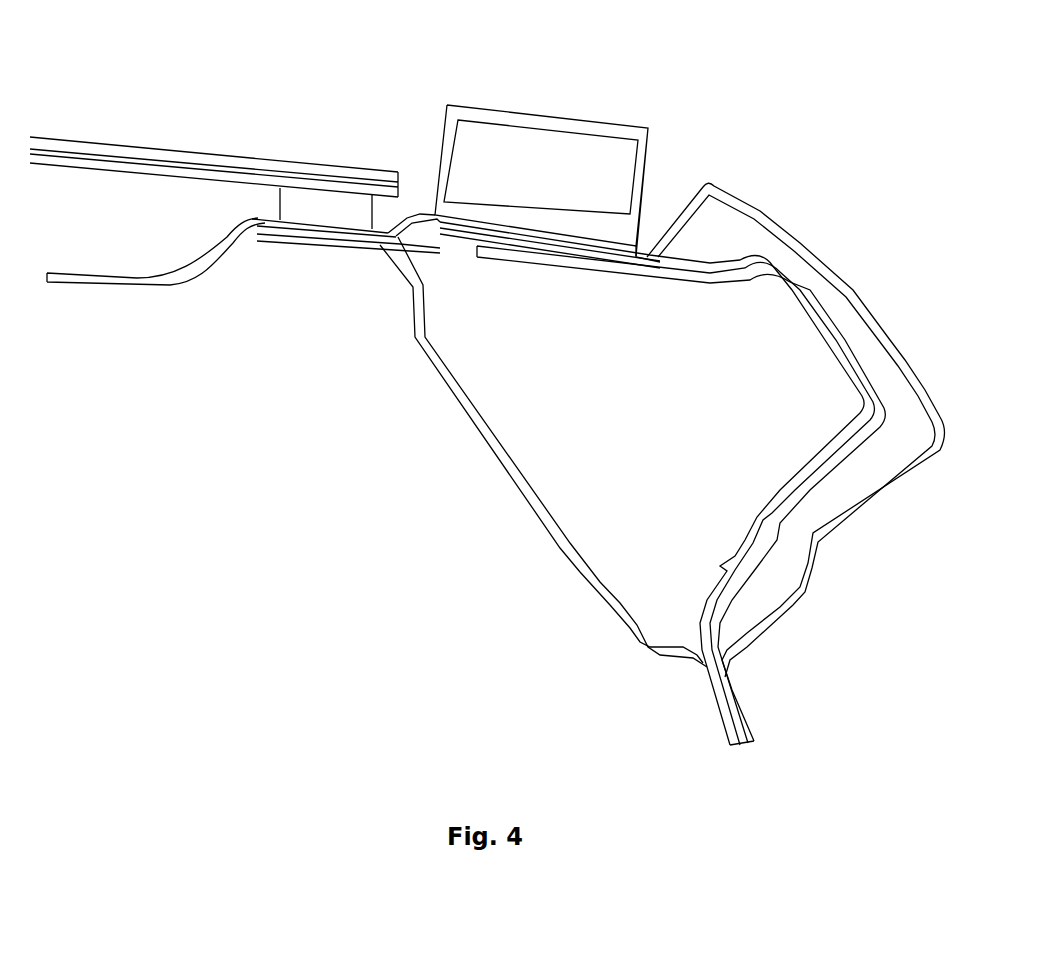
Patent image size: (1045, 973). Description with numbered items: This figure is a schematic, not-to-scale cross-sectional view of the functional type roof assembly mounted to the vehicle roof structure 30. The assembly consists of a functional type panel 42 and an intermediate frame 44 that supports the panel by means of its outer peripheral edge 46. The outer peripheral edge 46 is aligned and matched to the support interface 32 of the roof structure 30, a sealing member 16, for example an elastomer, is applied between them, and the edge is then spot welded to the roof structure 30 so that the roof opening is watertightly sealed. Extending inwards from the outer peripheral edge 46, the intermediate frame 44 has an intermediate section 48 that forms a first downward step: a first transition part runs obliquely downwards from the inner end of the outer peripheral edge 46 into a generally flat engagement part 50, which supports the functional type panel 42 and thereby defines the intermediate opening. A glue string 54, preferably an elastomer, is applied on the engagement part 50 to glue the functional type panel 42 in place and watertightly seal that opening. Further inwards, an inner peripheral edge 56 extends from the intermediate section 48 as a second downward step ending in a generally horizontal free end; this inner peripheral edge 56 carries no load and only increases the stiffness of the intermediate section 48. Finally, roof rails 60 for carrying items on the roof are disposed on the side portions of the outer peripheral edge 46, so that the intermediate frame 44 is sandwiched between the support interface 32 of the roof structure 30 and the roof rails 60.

The sealing member 16 is at (554, 245).
The roof structure 30 is at (801, 242).
The support interface 32 is at (645, 257).
The functional type panel 42 is at (162, 148).
The intermediate frame 44 is at (421, 213).
The outer peripheral edge 46 is at (473, 223).
The intermediate section 48 is at (260, 222).
The engagement part 50 is at (302, 230).
The glue string 54 is at (299, 190).
The inner peripheral edge 56 is at (83, 277).
The roof rails 60 is at (554, 115).